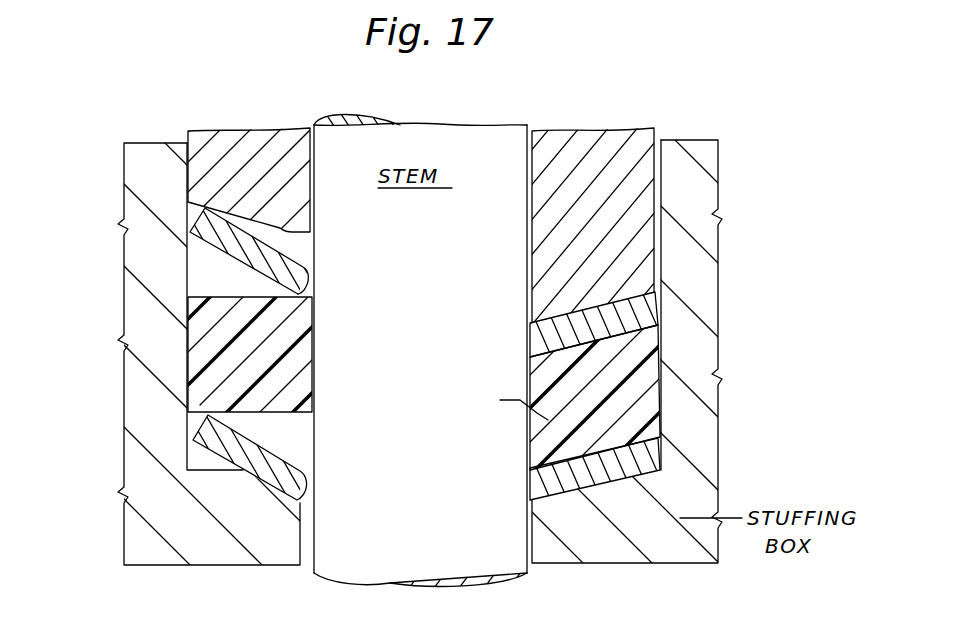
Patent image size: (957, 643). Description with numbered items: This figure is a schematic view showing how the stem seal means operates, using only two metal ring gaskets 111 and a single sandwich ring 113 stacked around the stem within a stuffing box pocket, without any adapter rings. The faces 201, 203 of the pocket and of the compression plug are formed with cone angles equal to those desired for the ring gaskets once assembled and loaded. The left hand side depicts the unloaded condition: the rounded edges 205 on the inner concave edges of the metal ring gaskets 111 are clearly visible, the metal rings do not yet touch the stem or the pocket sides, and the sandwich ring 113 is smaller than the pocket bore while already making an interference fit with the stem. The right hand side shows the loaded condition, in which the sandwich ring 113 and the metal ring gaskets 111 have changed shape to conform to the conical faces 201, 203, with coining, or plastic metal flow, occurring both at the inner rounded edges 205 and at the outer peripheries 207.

The metal ring gasket 111 is at (213, 240).
The sandwich ring 113 is at (210, 358).
The pocket face 201 is at (250, 480).
The compression plug face 203 is at (303, 246).
The rounded edges 205 is at (290, 276).
The outer periphery coining location 207 is at (465, 306).